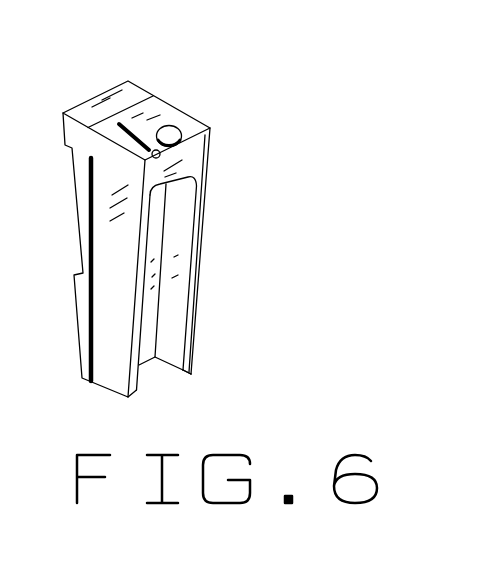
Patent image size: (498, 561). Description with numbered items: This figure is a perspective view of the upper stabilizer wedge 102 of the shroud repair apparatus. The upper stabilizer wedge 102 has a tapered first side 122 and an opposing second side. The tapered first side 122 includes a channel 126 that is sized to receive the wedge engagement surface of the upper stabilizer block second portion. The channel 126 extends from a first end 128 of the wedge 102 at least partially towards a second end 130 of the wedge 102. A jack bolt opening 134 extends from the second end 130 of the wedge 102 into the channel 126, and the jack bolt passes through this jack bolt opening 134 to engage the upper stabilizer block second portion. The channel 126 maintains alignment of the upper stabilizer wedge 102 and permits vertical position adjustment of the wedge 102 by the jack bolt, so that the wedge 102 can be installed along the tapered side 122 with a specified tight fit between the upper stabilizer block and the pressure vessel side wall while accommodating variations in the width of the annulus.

The upper stabilizer wedge 102 is at (210, 203).
The tapered first side 122 is at (197, 166).
The channel 126 is at (171, 296).
The first end 128 is at (190, 373).
The second end 130 is at (211, 128).
The jack bolt opening 134 is at (167, 131).